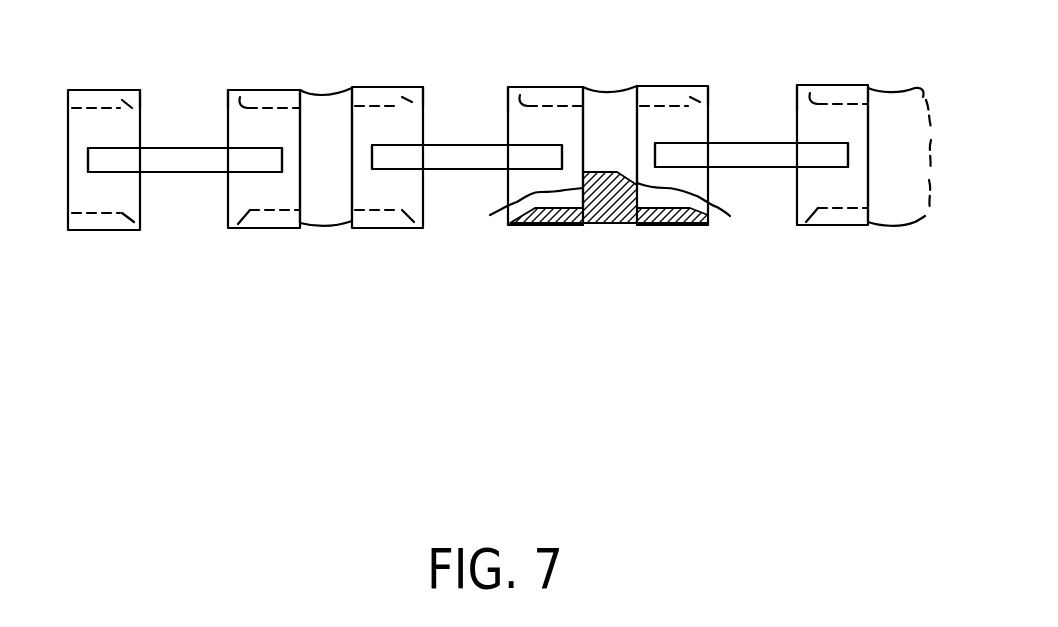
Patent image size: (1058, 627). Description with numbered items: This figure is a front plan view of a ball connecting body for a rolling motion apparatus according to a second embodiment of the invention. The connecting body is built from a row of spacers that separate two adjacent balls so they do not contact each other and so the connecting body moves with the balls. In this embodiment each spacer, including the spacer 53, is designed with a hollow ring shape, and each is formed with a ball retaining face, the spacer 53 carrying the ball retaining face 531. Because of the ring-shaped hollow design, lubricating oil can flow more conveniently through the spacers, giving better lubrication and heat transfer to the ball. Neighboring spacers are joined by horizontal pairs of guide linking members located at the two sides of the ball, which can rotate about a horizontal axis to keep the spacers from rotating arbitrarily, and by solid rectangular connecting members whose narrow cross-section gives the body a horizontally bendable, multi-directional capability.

The spacer 53 is at (93, 222).
The ball retaining face 531 is at (142, 108).